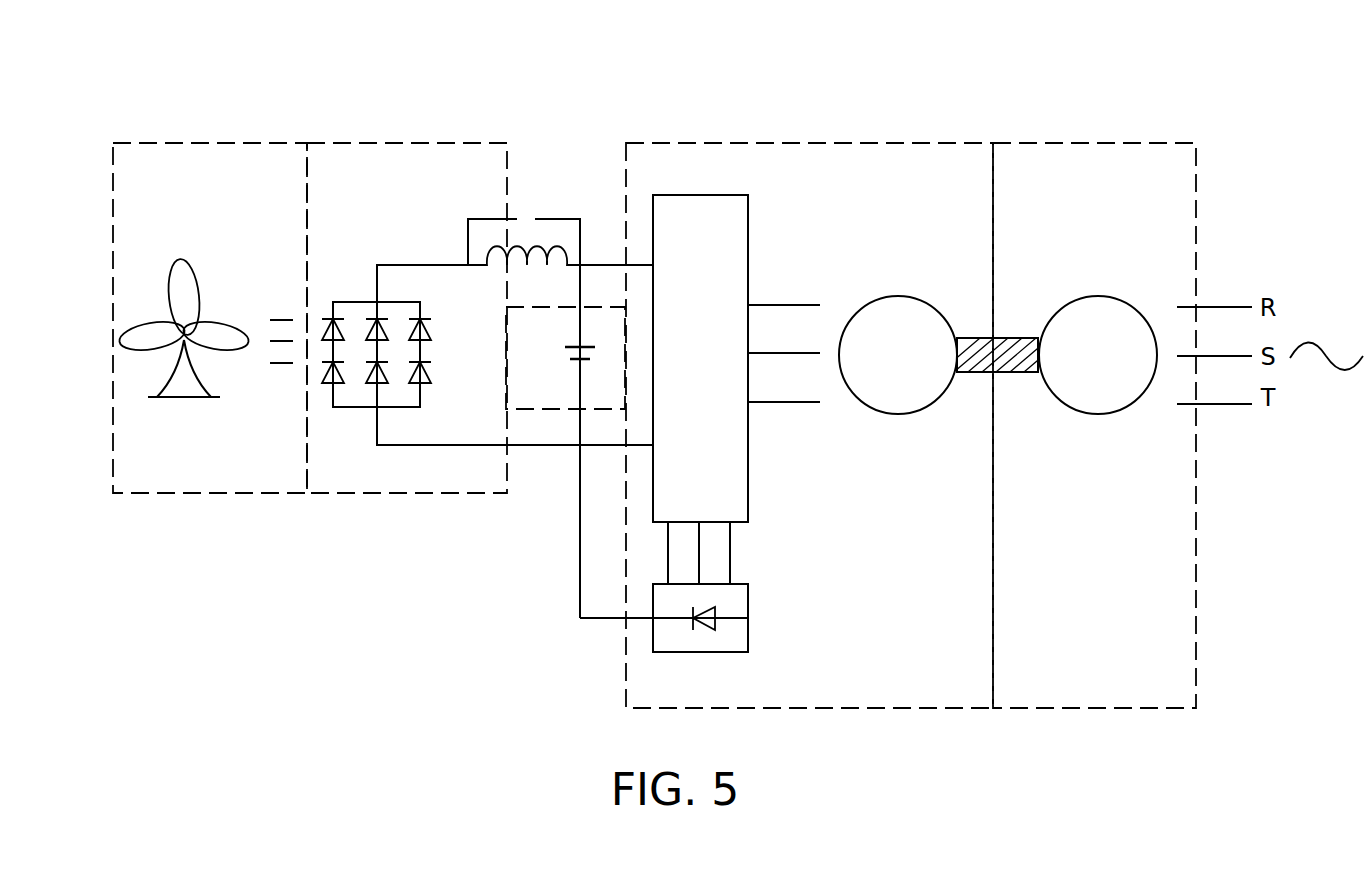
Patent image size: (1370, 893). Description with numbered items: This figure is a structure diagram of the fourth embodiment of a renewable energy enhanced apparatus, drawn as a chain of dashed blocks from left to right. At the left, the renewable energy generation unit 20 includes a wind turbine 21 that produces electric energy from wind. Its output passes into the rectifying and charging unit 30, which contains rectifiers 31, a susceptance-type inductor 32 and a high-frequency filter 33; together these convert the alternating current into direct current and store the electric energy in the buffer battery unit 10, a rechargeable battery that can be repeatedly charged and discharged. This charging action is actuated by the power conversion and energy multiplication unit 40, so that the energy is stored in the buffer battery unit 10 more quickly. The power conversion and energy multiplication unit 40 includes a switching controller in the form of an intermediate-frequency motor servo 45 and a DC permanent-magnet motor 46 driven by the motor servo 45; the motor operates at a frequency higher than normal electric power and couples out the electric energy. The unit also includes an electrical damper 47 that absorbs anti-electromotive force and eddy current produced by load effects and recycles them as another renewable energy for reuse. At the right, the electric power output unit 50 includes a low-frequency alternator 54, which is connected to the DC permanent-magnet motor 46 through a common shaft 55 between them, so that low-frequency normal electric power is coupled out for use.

The buffer battery unit 10 is at (567, 400).
The renewable energy generation unit 20 is at (203, 160).
The wind turbine 21 is at (184, 385).
The rectifying and charging unit 30 is at (440, 170).
The rectifiers 31 is at (353, 390).
The susceptance-type inductor 32 is at (513, 257).
The high-frequency filter 33 is at (527, 208).
The power conversion and energy multiplication unit 40 is at (823, 160).
The motor servo 45 is at (697, 197).
The DC permanent-magnet motor 46 is at (908, 400).
The electrical damper 47 is at (742, 638).
The electric power output unit 50 is at (1098, 173).
The low-frequency alternator 54 is at (1105, 313).
The common shaft 55 is at (1003, 347).